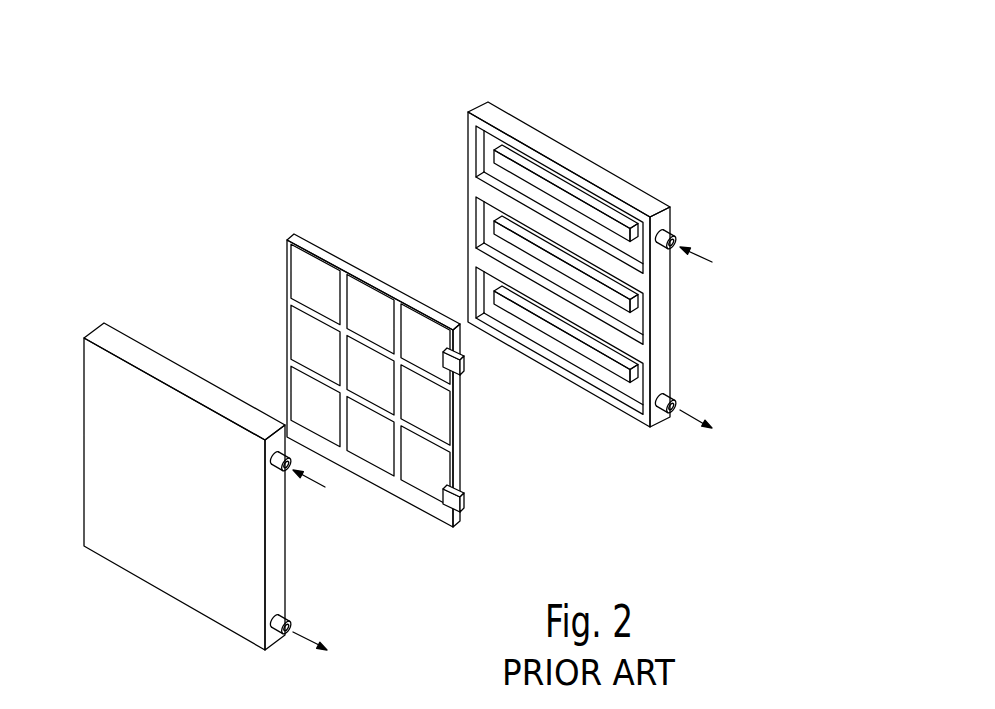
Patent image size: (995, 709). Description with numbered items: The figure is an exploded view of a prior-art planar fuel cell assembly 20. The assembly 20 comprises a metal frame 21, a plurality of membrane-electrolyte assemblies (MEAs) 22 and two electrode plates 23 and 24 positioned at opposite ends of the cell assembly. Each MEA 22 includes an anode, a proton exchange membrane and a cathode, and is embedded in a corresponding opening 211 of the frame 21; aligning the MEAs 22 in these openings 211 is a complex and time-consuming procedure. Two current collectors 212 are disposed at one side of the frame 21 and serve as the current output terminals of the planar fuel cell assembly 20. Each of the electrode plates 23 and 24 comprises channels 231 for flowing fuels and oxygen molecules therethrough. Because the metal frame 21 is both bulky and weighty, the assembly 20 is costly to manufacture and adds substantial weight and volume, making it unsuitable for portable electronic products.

The planar fuel cell assembly 20 is at (162, 141).
The metal frame 21 is at (385, 341).
The openings 211 is at (313, 257).
The current collectors 212 is at (457, 365).
The membrane-electrolyte assemblies 22 is at (300, 278).
The electrode plate 23 is at (529, 226).
The channels 231 is at (492, 148).
The electrode plate 24 is at (100, 337).